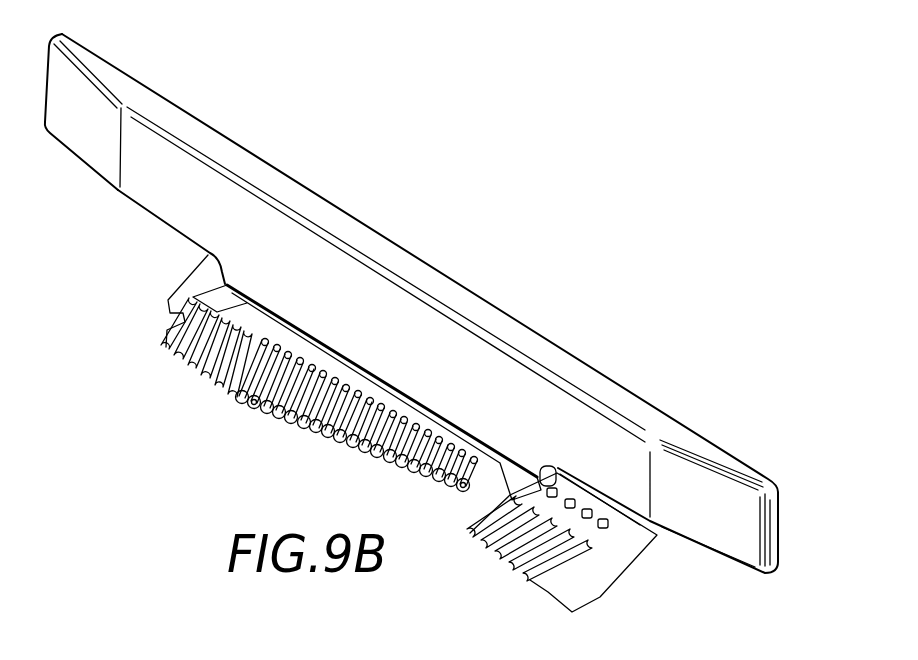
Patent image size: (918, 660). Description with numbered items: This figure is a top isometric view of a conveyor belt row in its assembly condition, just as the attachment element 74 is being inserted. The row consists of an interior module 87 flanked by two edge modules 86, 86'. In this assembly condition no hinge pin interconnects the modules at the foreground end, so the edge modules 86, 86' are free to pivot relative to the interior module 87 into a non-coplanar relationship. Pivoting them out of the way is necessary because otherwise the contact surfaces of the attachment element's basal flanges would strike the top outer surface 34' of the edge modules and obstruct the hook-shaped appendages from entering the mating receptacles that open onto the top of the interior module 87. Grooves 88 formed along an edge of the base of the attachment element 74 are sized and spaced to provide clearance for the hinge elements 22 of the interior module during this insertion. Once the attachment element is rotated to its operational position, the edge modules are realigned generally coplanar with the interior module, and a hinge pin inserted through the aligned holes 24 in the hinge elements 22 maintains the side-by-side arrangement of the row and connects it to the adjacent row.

The attachment element 74 is at (373, 322).
The grooves 88 is at (357, 380).
The edge module 86 is at (584, 544).
The edge module 86' is at (147, 308).
The top outer surface 34' is at (372, 471).
The hinge elements 22 is at (382, 452).
The holes 24 is at (256, 404).
The interior module 87 is at (470, 494).